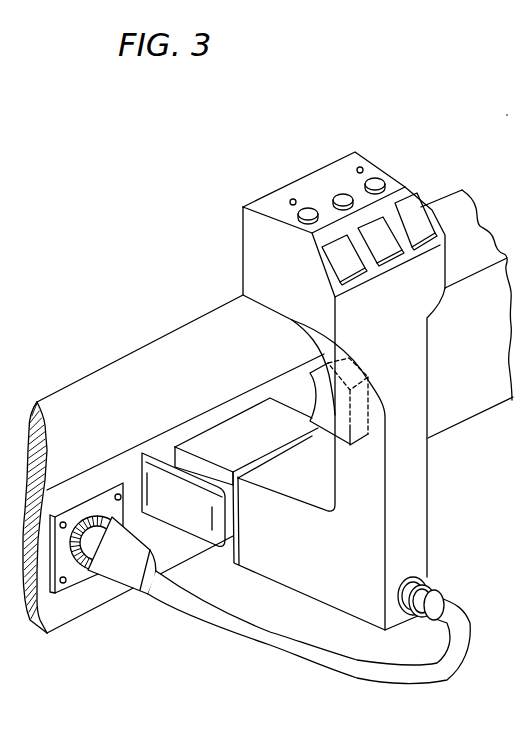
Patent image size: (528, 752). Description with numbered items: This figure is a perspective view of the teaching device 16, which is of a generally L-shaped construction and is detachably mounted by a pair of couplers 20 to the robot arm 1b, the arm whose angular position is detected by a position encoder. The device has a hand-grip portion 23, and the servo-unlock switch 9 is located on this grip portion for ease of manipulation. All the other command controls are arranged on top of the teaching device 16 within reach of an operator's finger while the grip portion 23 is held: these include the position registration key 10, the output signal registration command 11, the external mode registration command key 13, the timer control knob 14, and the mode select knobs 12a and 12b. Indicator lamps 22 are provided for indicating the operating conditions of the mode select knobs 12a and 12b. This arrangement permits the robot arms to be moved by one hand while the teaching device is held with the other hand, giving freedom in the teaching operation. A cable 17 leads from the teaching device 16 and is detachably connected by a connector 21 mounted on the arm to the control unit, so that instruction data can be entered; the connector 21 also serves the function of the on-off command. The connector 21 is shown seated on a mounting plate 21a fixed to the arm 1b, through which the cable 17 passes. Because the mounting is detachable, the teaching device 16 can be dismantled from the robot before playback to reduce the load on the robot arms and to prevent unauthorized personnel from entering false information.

The arm 1b is at (186, 338).
The servo-unlock switch 9 is at (330, 424).
The position registration key 10 is at (381, 221).
The output signal registration command 11 is at (335, 263).
The mode select knob 12a is at (308, 208).
The mode select knob 12b is at (378, 178).
The external mode registration command key 13 is at (420, 216).
The timer control knob 14 is at (343, 194).
The teaching device 16 is at (245, 270).
The cable 17 is at (466, 658).
The couplers 20 is at (205, 537).
The connector 21 is at (118, 575).
The connector mounting plate 21a is at (73, 577).
The indicator lamps 22 is at (290, 202).
The hand-grip portion 23 is at (372, 487).